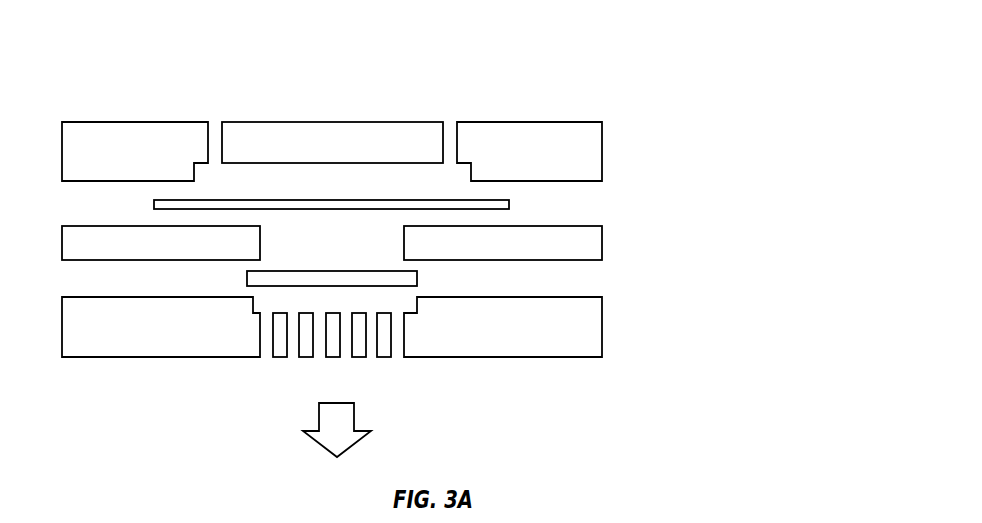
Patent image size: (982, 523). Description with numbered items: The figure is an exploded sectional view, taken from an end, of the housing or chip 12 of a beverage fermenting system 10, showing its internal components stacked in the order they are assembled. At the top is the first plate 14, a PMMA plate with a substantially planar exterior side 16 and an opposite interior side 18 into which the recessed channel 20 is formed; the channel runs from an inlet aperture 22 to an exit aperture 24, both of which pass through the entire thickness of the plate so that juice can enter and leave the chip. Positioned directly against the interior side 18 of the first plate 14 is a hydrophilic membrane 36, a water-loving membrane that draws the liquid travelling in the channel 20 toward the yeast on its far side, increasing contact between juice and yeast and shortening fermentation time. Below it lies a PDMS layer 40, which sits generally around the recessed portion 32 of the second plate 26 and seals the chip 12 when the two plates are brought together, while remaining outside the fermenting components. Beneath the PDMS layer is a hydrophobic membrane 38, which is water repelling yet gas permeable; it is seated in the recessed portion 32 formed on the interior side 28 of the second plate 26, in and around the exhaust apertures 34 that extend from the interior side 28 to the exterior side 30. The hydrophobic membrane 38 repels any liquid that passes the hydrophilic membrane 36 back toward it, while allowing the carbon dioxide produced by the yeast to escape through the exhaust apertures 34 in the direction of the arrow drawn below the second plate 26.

The beverage fermenting system 10 is at (193, 53).
The chip housing 12 is at (603, 108).
The first plate 14 is at (533, 122).
The exterior side 16 is at (108, 122).
The interior side 18 is at (92, 181).
The channel 20 is at (343, 163).
The inlet aperture 22 is at (450, 122).
The exit aperture 24 is at (212, 122).
The second plate 26 is at (556, 363).
The interior side 28 is at (78, 297).
The exterior side 30 is at (93, 357).
The recessed portion 32 is at (253, 300).
The exhaust apertures 34 is at (290, 357).
The hydrophilic membrane 36 is at (517, 207).
The hydrophobic membrane 38 is at (425, 278).
The PDMS layer 40 is at (604, 243).